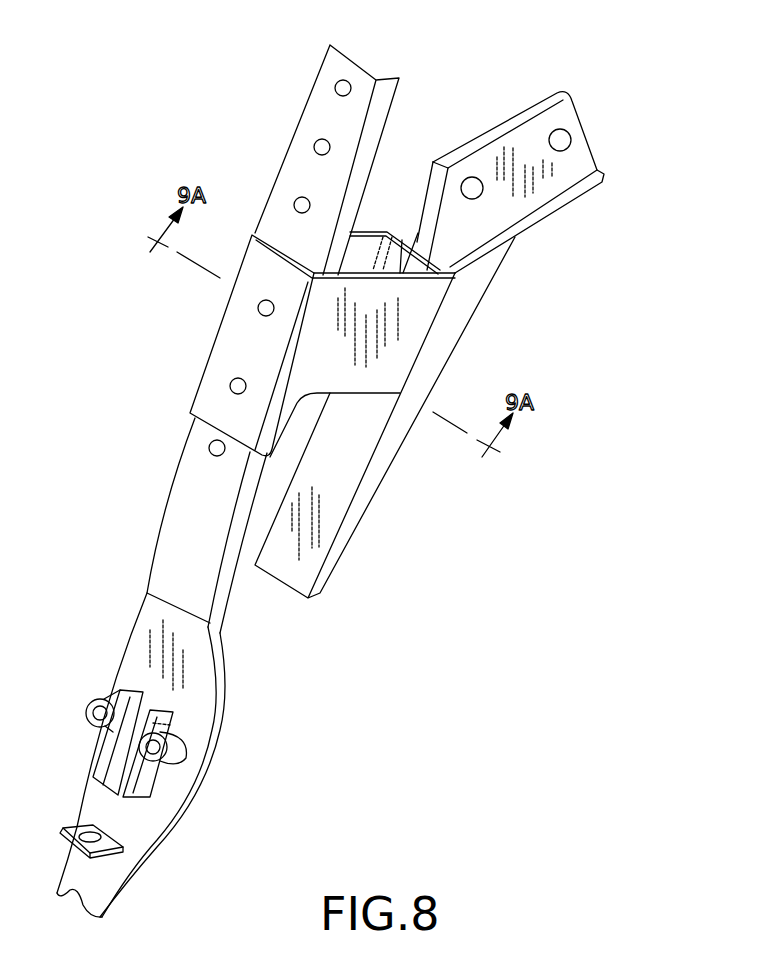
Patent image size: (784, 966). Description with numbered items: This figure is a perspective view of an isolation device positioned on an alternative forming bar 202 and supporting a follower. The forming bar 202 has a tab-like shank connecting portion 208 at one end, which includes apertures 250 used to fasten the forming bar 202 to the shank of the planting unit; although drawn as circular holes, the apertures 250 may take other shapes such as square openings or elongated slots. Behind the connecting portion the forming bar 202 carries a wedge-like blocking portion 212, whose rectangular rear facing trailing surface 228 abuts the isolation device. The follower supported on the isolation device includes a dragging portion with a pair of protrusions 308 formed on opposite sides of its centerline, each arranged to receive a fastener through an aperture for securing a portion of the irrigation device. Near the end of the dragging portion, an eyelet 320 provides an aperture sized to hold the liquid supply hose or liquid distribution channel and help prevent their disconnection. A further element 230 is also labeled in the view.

The forming bar 202 is at (565, 337).
The tab-like shank connecting portion 208 is at (531, 80).
The wedge-like blocking portion 212 is at (380, 480).
The trailing surface 228 is at (328, 517).
The channel bracket 230 is at (462, 317).
The apertures 250 is at (580, 124).
The protrusions 308 is at (86, 713).
The eyelet 320 is at (117, 853).